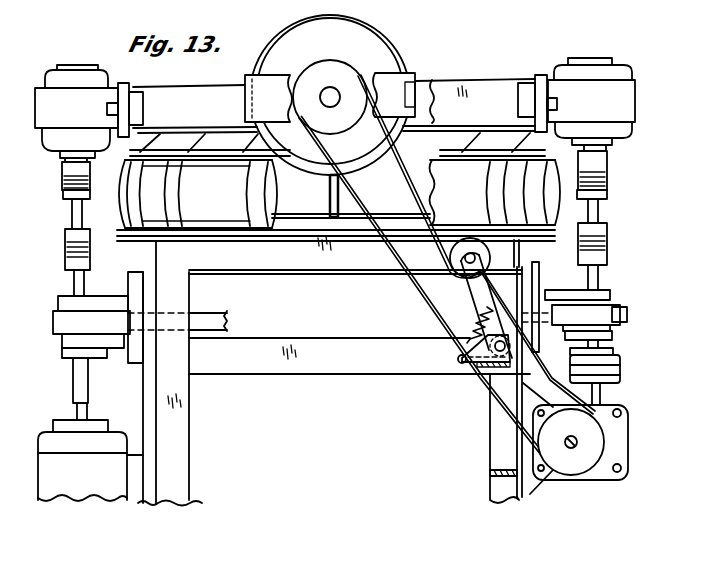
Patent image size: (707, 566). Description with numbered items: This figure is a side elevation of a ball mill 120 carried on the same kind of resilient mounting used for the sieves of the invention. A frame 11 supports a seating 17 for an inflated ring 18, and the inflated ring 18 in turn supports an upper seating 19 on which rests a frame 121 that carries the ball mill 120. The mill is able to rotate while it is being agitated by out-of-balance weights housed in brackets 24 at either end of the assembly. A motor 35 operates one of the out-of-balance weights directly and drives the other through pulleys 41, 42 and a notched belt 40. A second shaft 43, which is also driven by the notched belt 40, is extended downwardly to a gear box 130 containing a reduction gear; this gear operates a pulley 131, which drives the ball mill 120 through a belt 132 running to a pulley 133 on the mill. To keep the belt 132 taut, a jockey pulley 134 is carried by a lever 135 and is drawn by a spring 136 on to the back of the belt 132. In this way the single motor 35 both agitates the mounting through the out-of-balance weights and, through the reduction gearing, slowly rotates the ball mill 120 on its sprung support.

The frame 11 is at (170, 433).
The seating 17 is at (222, 218).
The inflated ring 18 is at (205, 160).
The upper seating 19 is at (228, 160).
The brackets 24 is at (72, 100).
The motor 35 is at (110, 473).
The notched belt 40 is at (118, 322).
The pulley 41 is at (97, 337).
The pulley 42 is at (518, 397).
The second shaft 43 is at (553, 407).
The ball mill 120 is at (362, 40).
The frame 121 is at (463, 90).
The gear box 130 is at (612, 458).
The pulley 131 is at (553, 441).
The belt 132 is at (465, 318).
The pulley 133 is at (367, 62).
The jockey pulley 134 is at (448, 262).
The lever 135 is at (458, 286).
The spring 136 is at (455, 342).